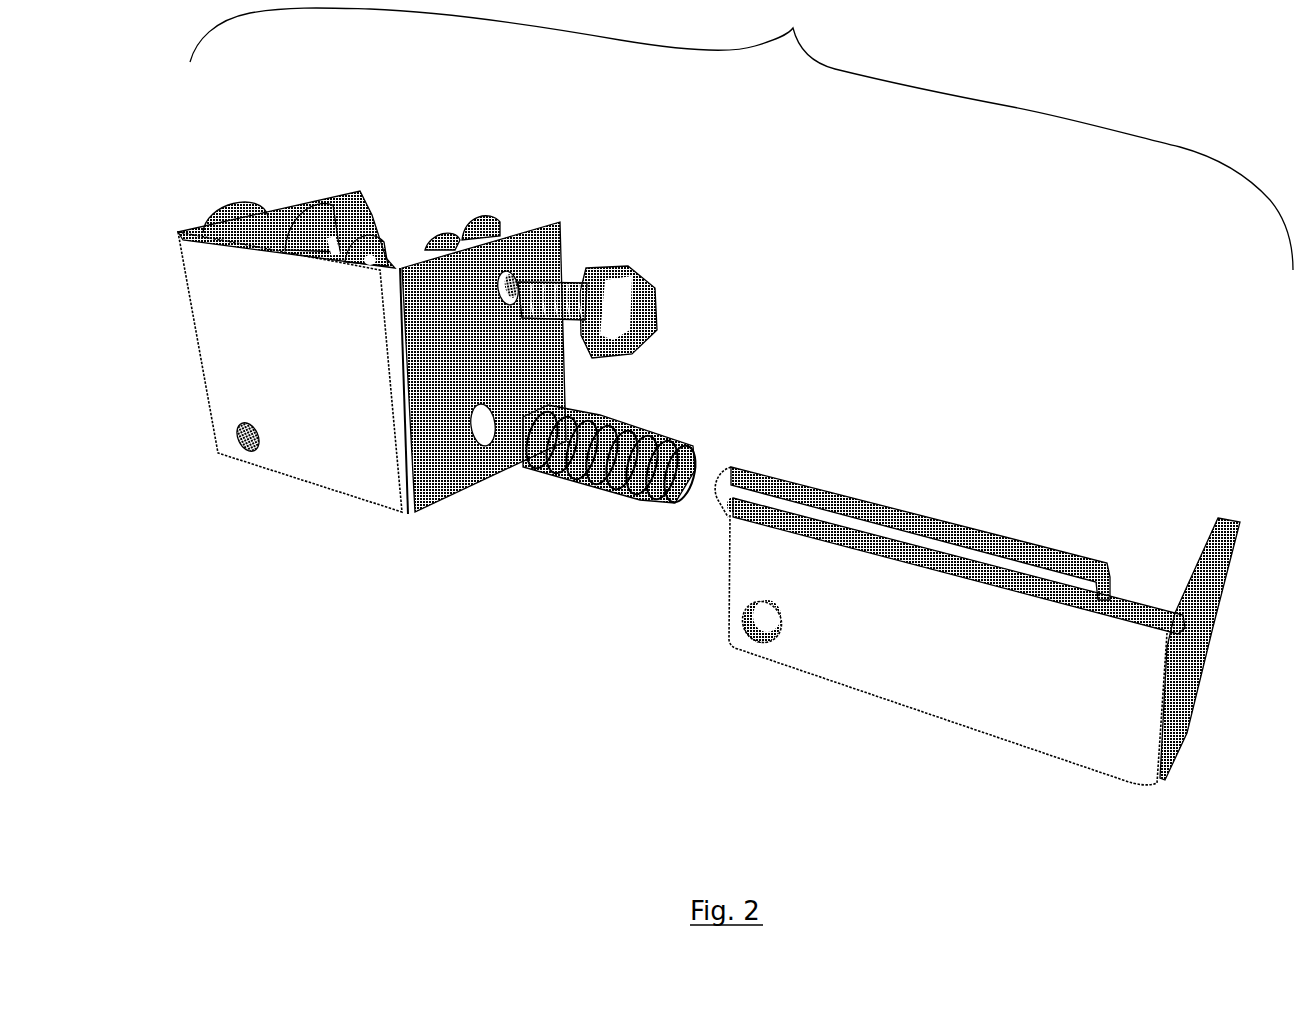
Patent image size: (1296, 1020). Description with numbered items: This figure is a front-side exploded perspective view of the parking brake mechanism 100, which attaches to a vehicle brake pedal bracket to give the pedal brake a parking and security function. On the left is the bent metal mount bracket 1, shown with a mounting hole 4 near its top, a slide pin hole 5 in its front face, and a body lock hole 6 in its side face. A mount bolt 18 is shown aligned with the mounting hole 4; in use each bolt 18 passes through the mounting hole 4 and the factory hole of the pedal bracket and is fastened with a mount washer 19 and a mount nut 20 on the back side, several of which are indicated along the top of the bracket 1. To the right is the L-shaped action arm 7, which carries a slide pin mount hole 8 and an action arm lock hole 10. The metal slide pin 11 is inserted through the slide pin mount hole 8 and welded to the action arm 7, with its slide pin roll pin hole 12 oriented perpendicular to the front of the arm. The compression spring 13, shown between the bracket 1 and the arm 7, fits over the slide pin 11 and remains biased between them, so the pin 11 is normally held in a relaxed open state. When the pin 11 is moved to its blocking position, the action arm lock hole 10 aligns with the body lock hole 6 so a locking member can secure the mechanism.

The parking brake mechanism 100 is at (741, 135).
The mount bracket 1 is at (197, 348).
The mounting hole 4 is at (507, 288).
The slide pin hole 5 is at (482, 426).
The body lock hole 6 is at (247, 443).
The action arm 7 is at (955, 723).
The slide pin mount hole 8 is at (1212, 627).
The action arm lock hole 10 is at (768, 622).
The slide pin 11 is at (920, 515).
The slide pin roll pin hole 12 is at (725, 505).
The spring 13 is at (594, 488).
The mount bolt 18 is at (222, 202).
The mount washer 19 is at (308, 205).
The mount nut 20 is at (376, 233).